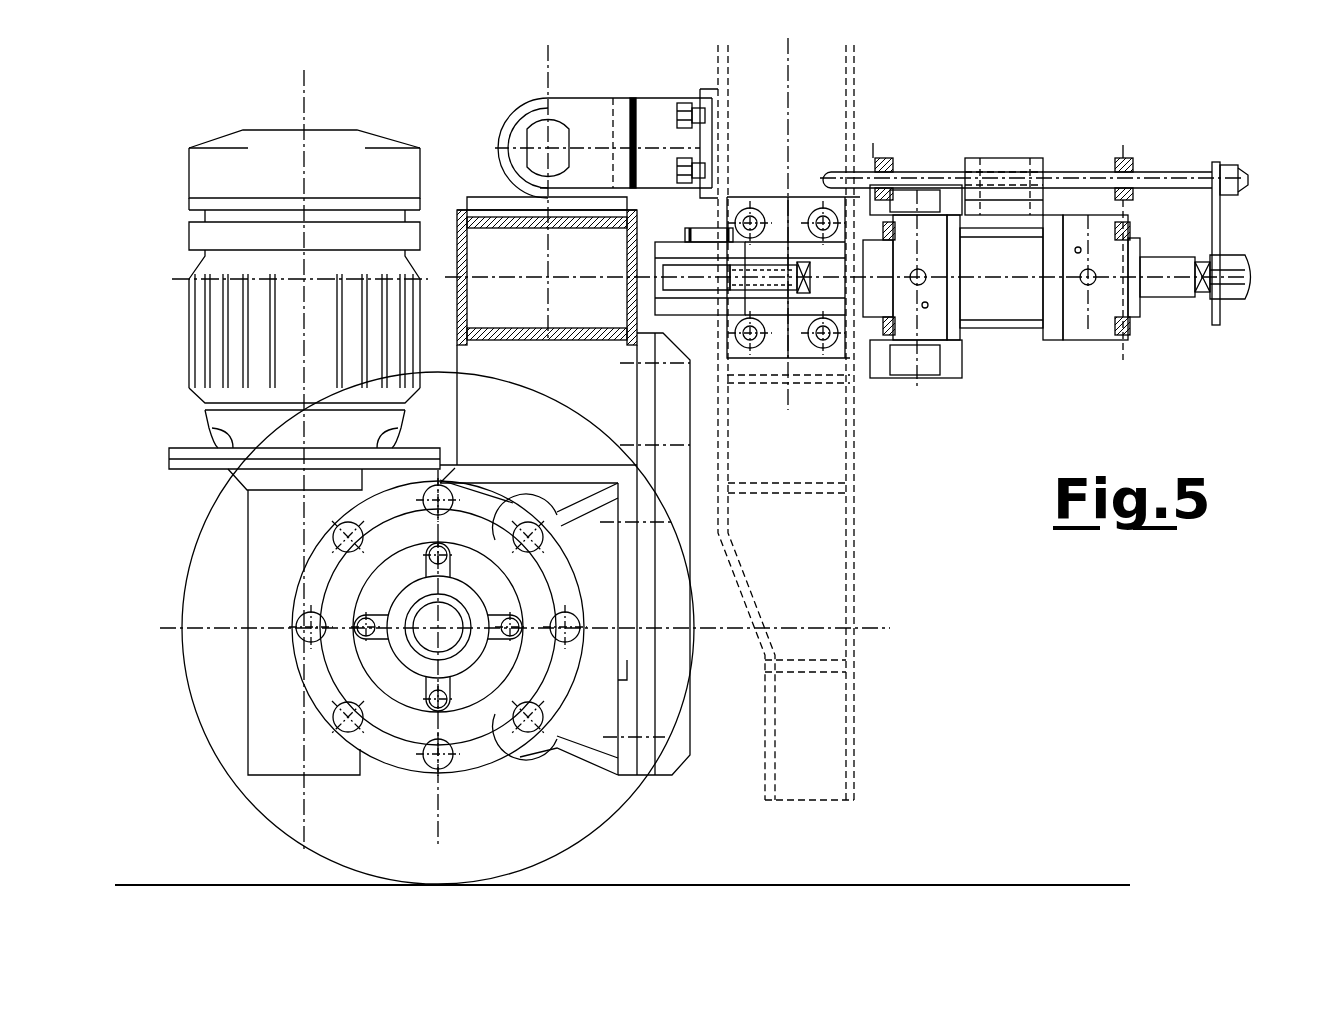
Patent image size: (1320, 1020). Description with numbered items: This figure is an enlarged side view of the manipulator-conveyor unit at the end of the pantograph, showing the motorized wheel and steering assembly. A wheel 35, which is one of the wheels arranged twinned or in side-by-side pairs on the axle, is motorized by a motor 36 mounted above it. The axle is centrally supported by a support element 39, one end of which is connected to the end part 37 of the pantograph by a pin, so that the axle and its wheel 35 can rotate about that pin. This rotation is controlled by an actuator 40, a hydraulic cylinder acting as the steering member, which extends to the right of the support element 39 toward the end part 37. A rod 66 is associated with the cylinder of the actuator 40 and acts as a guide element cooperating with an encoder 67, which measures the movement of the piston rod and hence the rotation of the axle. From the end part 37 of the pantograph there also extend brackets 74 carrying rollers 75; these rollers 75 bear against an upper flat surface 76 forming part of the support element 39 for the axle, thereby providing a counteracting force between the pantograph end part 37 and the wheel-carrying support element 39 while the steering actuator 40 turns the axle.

The wheels 35 is at (195, 587).
The motor 36 is at (338, 143).
The end part of the pantograph 37 is at (837, 73).
The support element 39 is at (622, 393).
The actuator 40 is at (1010, 313).
The rod 66 is at (1175, 178).
The encoder 67 is at (1010, 170).
The brackets 74 is at (657, 113).
The rollers 75 is at (527, 110).
The upper flat surface 76 is at (484, 196).